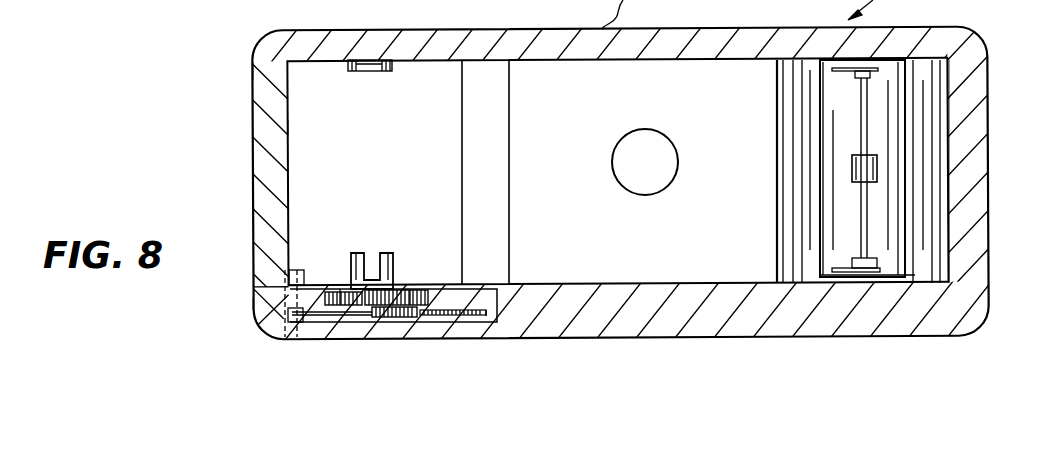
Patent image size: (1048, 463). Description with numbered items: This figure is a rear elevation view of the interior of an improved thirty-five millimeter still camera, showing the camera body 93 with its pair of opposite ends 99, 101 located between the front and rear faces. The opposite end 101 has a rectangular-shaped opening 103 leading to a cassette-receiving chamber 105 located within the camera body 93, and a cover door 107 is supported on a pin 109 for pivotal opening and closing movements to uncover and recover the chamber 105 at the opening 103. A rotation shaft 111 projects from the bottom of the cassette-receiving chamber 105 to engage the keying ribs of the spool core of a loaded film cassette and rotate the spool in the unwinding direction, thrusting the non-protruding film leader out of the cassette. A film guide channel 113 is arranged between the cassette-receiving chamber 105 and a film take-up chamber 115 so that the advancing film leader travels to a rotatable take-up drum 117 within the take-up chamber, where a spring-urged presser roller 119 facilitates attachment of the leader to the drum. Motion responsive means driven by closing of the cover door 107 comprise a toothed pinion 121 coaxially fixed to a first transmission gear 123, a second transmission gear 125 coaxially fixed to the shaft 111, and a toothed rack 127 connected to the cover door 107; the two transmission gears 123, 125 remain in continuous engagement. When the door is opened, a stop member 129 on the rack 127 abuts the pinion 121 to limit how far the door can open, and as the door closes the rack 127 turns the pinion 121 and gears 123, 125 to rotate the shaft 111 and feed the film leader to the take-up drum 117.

The camera body 93 is at (982, 336).
The end 99 is at (993, 148).
The opposite end 101 is at (253, 303).
The rectangular-shaped opening 103 is at (253, 85).
The cassette-receiving chamber 105 is at (309, 131).
The cover door 107 is at (253, 172).
The pin 109 is at (65, 10).
The rotation shaft 111 is at (388, 256).
The film guide channel 113 is at (657, 70).
The film take-up chamber 115 is at (802, 187).
The take-up drum 117 is at (843, 218).
The presser roller 119 is at (853, 165).
The toothed pinion 121 is at (402, 316).
The first transmission gear 123 is at (412, 289).
The second transmission gear 125 is at (341, 288).
The rack 127 is at (461, 315).
The stop member 129 is at (486, 313).